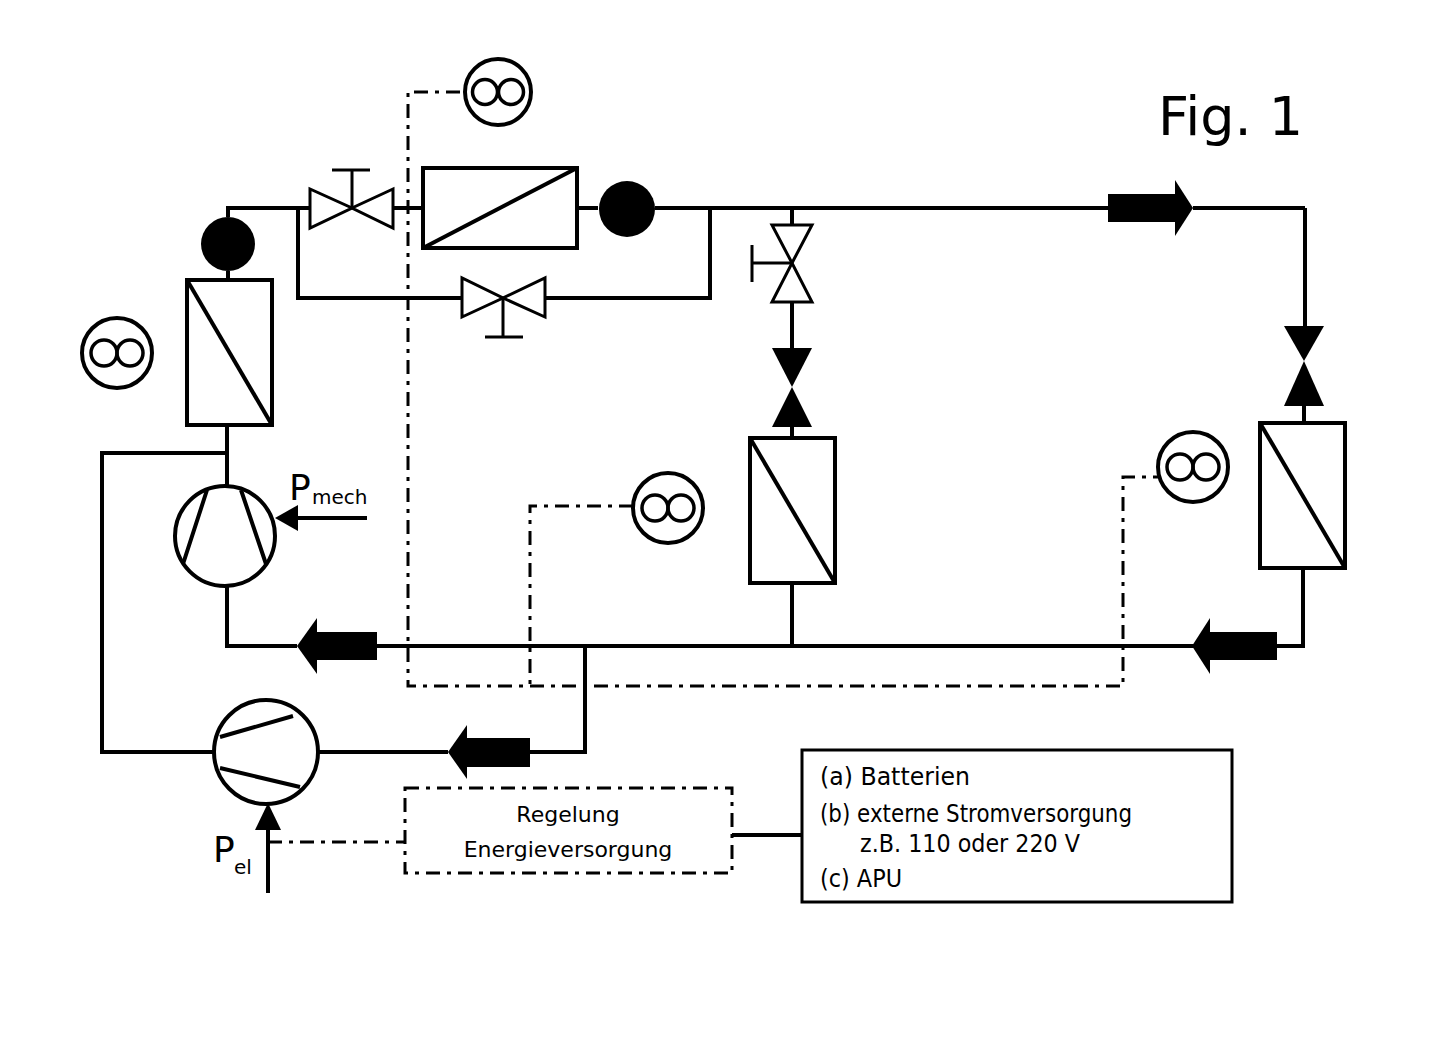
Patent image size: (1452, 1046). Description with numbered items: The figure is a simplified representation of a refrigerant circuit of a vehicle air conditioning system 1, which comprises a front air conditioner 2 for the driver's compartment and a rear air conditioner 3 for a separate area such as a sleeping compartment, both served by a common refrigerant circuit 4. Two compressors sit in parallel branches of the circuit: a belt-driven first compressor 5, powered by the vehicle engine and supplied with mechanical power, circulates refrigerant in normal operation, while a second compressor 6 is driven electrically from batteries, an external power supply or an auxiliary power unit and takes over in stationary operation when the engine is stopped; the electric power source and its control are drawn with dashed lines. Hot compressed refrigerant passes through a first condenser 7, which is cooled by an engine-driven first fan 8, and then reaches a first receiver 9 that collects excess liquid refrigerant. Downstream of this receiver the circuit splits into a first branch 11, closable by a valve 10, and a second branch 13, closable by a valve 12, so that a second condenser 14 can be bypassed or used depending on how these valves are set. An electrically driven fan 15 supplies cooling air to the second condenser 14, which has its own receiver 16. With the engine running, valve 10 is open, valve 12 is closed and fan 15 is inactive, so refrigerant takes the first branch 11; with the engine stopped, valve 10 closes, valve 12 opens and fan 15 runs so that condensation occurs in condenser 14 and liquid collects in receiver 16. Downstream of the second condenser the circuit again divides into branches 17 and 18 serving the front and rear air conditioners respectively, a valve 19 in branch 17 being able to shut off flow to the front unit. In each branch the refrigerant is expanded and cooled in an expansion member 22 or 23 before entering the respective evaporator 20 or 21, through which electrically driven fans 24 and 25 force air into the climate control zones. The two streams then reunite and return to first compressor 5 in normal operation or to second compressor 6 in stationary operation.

The vehicle air conditioning system 1 is at (1306, 792).
The front air conditioner 2 is at (877, 517).
The rear air conditioner 3 is at (1360, 600).
The refrigerant circuit 4 is at (737, 205).
The first compressor 5 is at (235, 553).
The second compressor 6 is at (262, 760).
The first condenser 7 is at (250, 362).
The first fan 8 is at (115, 333).
The first receiver 9 is at (203, 233).
The first valve 10 is at (497, 323).
The first branch 11 is at (600, 300).
The second valve 12 is at (347, 207).
The second branch 13 is at (670, 203).
The second condenser 14 is at (493, 185).
The second fan 15 is at (493, 75).
The second receiver 16 is at (630, 183).
The branch 17 is at (792, 332).
The branch 18 is at (1300, 277).
The valve 19 is at (800, 265).
The evaporator 20 is at (815, 497).
The evaporator 21 is at (1285, 522).
The expansion member 22 is at (798, 398).
The expansion member 23 is at (1288, 345).
The fan 24 is at (678, 518).
The fan 25 is at (1162, 458).